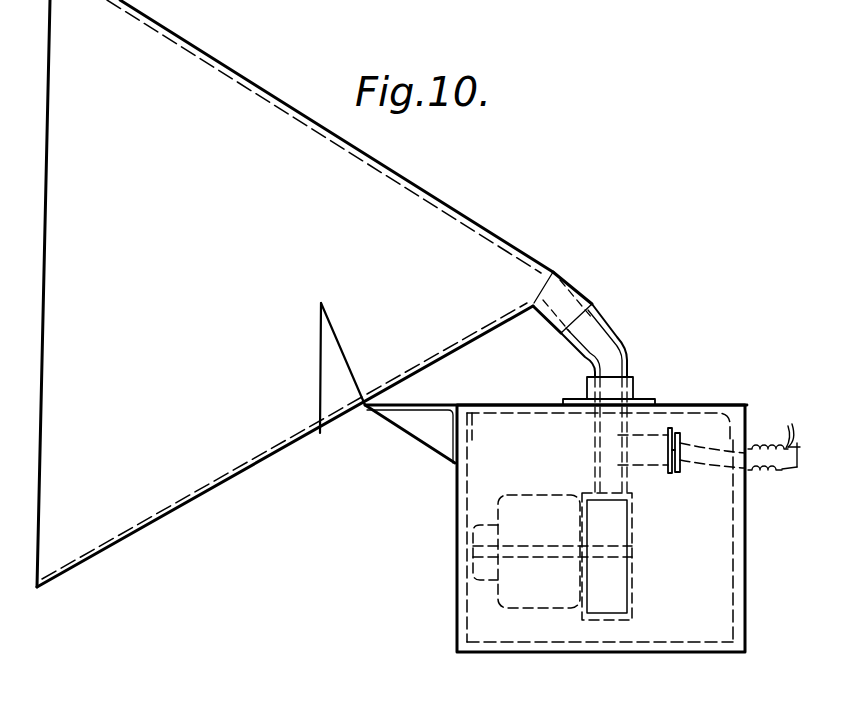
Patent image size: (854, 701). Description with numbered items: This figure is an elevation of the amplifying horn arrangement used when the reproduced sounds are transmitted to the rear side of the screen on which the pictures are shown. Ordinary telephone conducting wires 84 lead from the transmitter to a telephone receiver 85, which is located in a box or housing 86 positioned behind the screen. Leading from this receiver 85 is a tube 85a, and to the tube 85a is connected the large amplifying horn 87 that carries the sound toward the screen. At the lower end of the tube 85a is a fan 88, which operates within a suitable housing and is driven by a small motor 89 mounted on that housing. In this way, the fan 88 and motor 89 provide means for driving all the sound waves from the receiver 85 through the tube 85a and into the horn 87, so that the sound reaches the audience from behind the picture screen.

The amplifying horn 87 is at (392, 293).
The tube 85a is at (612, 332).
The telephone receiver 85 is at (658, 433).
The telephone conducting wires 84 is at (774, 434).
The box or housing 86 is at (710, 588).
The fan 88 is at (607, 585).
The motor 89 is at (510, 587).